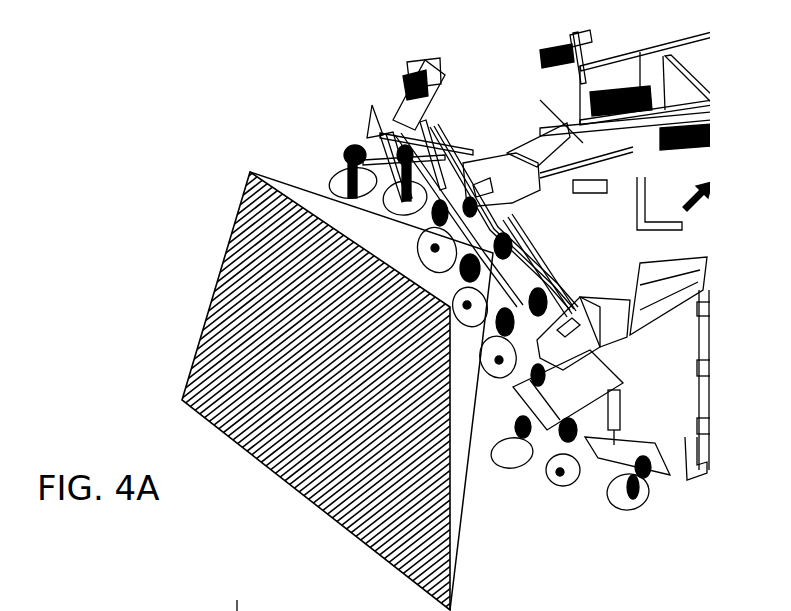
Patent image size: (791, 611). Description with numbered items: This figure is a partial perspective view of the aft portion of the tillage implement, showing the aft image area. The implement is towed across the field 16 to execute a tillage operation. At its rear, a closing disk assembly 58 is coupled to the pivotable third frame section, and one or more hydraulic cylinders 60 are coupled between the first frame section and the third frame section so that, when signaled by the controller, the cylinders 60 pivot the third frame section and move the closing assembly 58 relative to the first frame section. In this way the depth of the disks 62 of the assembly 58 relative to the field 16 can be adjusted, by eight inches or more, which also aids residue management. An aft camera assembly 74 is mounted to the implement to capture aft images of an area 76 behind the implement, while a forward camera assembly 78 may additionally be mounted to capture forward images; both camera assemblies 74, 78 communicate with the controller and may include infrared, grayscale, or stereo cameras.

The field 16 is at (172, 315).
The closing disk assembly 58 is at (528, 517).
The hydraulic cylinders 60 is at (510, 72).
The disks 62 is at (343, 168).
The aft camera assembly 74 is at (517, 252).
The area behind the implement 76 is at (216, 205).
The forward camera assembly 78 is at (237, 610).